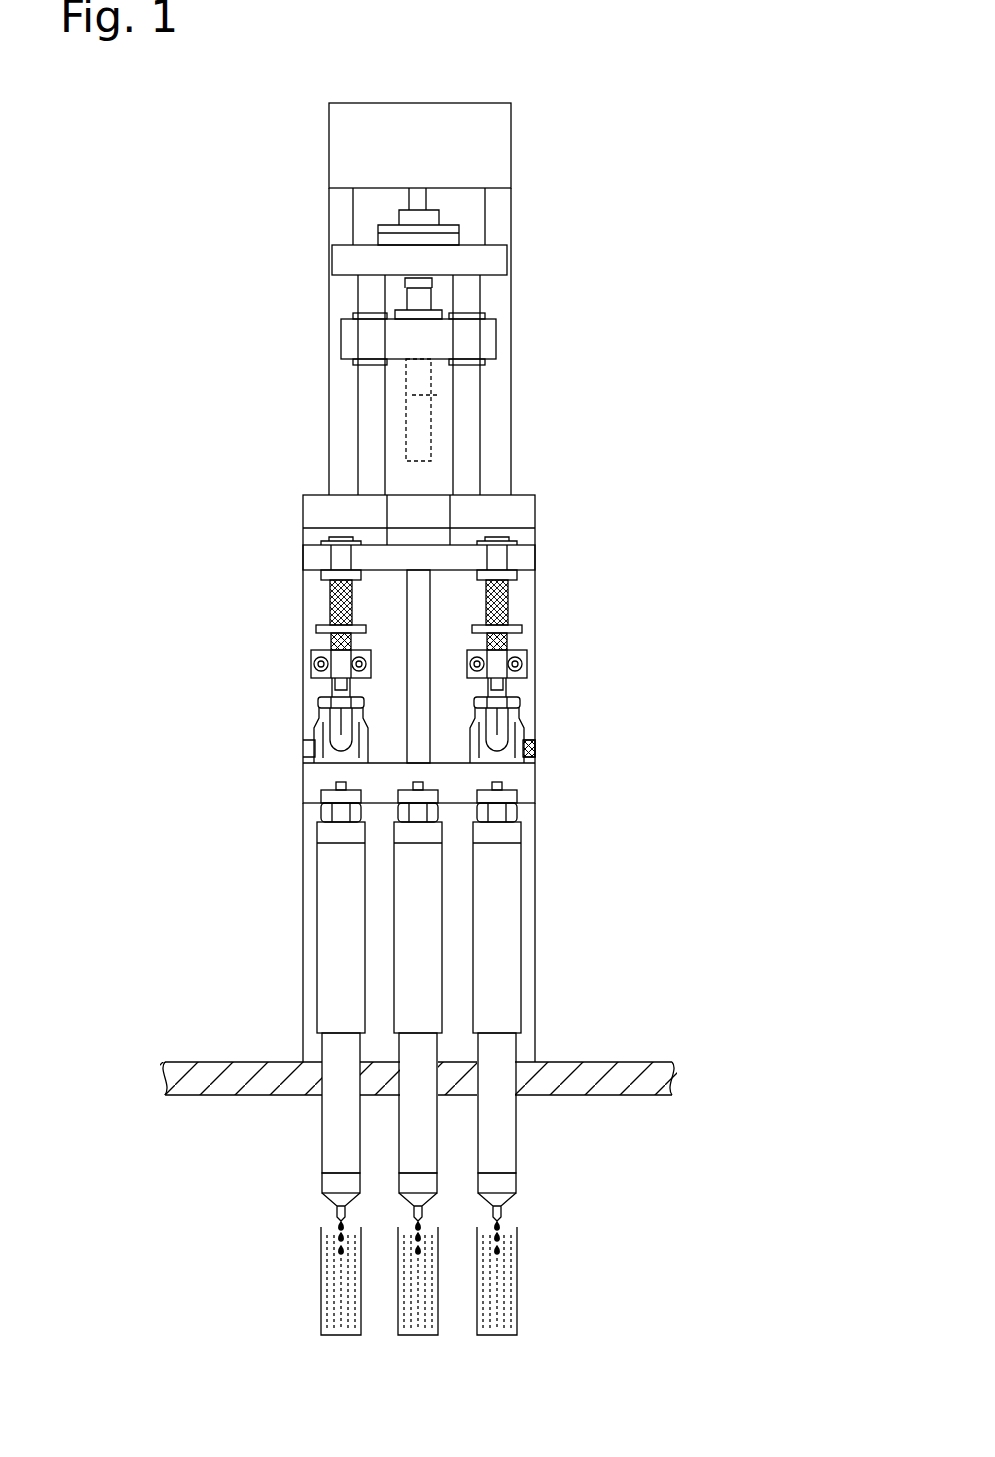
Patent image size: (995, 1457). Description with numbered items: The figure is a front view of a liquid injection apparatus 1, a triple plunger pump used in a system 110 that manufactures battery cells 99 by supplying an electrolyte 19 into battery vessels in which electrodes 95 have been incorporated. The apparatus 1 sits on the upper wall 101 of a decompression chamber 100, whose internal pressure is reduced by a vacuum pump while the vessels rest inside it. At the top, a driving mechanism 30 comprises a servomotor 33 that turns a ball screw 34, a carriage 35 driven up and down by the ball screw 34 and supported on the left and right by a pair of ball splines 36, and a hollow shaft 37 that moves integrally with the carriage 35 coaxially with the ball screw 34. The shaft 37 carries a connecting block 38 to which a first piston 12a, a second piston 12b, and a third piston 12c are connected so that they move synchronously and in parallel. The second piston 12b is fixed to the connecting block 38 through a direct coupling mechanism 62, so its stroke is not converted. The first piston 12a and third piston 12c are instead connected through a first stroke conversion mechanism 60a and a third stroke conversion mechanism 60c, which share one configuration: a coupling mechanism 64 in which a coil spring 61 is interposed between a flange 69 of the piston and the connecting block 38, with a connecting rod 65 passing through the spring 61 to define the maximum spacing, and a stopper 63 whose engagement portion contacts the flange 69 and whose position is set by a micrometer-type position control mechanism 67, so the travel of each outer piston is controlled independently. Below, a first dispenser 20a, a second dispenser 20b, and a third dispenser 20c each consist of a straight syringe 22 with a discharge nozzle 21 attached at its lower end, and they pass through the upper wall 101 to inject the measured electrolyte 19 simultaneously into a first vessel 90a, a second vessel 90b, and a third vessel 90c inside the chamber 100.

The liquid injection apparatus 1 is at (577, 88).
The driving mechanism 30 is at (587, 220).
The servomotor 33 is at (499, 150).
The ball screw 34 is at (423, 400).
The carriage 35 is at (482, 340).
The ball splines 36 is at (366, 313).
The hollow shaft 37 is at (438, 433).
The connecting block 38 is at (520, 548).
The direct coupling mechanism 62 is at (440, 598).
The coupling mechanism 64 is at (297, 587).
The stopper 63 is at (570, 657).
The connecting rod 65 is at (507, 560).
The coil spring 61 is at (512, 600).
The flange 69 is at (522, 627).
The position control mechanism 67 is at (505, 683).
The first stroke conversion mechanism 60a is at (290, 603).
The third stroke conversion mechanism 60c is at (548, 602).
The first piston 12a is at (323, 638).
The second piston 12b is at (415, 745).
The third piston 12c is at (505, 645).
The first dispenser 20a is at (328, 942).
The second dispenser 20b is at (405, 886).
The third dispenser 20c is at (513, 925).
The syringe 22 is at (332, 1140).
The discharge nozzle 21 is at (340, 1212).
The electrolyte 19 is at (340, 1237).
The upper wall 101 is at (603, 1070).
The system 110 is at (672, 1042).
The decompression chamber 100 is at (610, 1156).
The battery cells 99 is at (520, 1240).
The first vessel 90a is at (322, 1283).
The second vessel 90b is at (398, 1325).
The third vessel 90c is at (476, 1325).
The electrodes 95 is at (500, 1288).